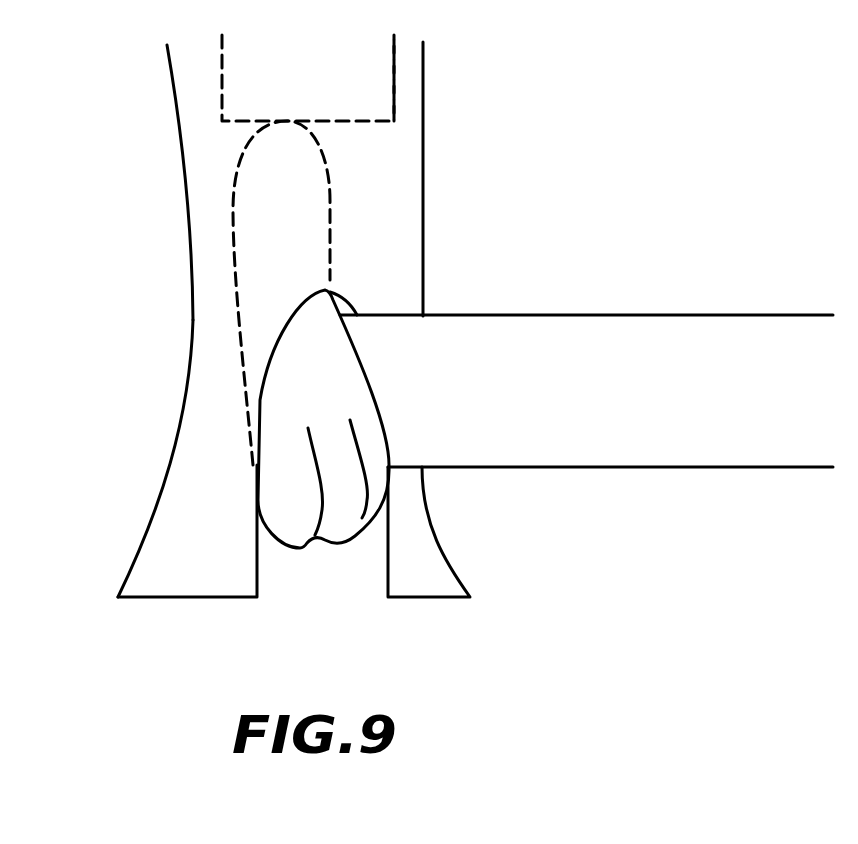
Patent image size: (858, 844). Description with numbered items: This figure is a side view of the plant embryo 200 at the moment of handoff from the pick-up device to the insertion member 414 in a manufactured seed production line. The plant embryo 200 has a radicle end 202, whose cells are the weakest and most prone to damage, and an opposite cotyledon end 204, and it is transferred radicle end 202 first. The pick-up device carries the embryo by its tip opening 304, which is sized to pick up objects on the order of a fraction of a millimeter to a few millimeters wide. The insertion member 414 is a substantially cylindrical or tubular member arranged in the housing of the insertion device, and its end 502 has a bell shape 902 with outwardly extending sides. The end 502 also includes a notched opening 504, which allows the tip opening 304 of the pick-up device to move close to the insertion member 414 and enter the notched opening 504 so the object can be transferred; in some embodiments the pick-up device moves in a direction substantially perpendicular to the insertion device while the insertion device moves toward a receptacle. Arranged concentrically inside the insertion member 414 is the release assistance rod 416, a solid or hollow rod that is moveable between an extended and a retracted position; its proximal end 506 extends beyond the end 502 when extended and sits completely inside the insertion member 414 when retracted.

The plant embryo 200 is at (265, 317).
The radicle end 202 is at (313, 200).
The cotyledon end 204 is at (303, 547).
The tip opening 304 is at (632, 325).
The insertion member 414 is at (423, 153).
The release assistance rod 416 is at (395, 83).
The end of the insertion member 502 is at (172, 467).
The notched opening 504 is at (348, 302).
The proximal end 506 is at (239, 79).
The bell shape 902 is at (135, 568).